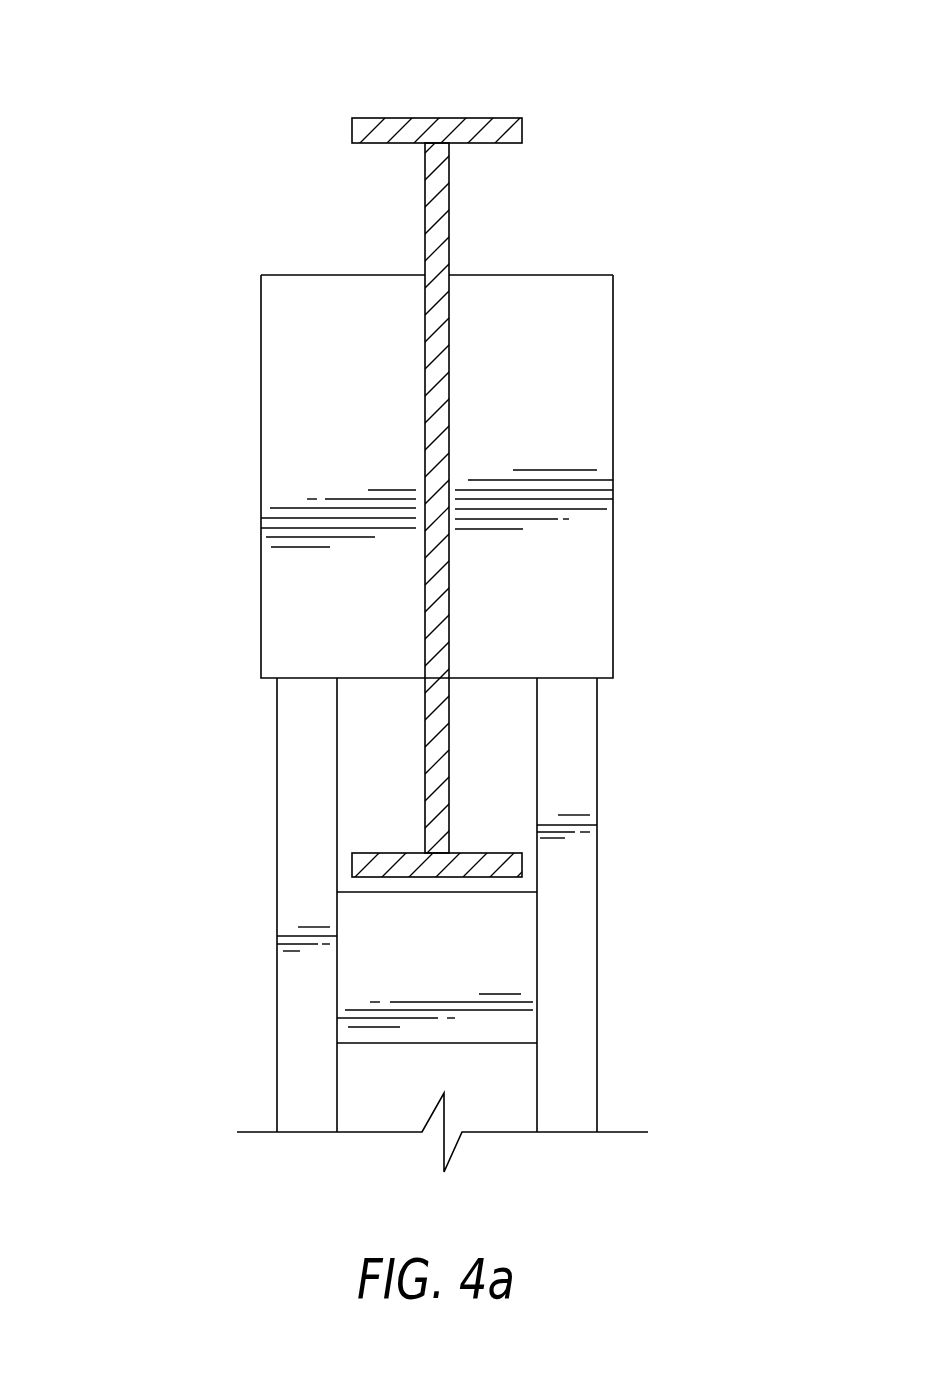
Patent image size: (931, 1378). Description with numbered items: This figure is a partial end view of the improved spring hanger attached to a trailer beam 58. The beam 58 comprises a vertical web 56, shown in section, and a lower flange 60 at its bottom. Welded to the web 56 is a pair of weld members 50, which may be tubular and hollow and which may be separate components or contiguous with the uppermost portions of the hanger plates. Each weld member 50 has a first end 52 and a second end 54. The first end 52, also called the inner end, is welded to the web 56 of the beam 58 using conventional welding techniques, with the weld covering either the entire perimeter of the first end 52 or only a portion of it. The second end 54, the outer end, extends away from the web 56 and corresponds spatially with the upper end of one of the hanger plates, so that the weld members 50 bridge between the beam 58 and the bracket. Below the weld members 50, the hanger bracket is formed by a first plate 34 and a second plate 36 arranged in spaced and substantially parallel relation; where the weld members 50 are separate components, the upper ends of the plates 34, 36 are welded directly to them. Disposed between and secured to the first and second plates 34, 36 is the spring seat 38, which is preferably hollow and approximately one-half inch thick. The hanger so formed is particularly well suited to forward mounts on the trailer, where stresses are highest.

The first plate 34 is at (293, 1002).
The second plate 36 is at (580, 1002).
The spring seat 38 is at (455, 972).
The weld members 50 is at (360, 613).
The first end 52 is at (424, 272).
The second end 54 is at (261, 330).
The web 56 is at (437, 453).
The beam 58 is at (397, 125).
The lower flange 60 is at (480, 863).